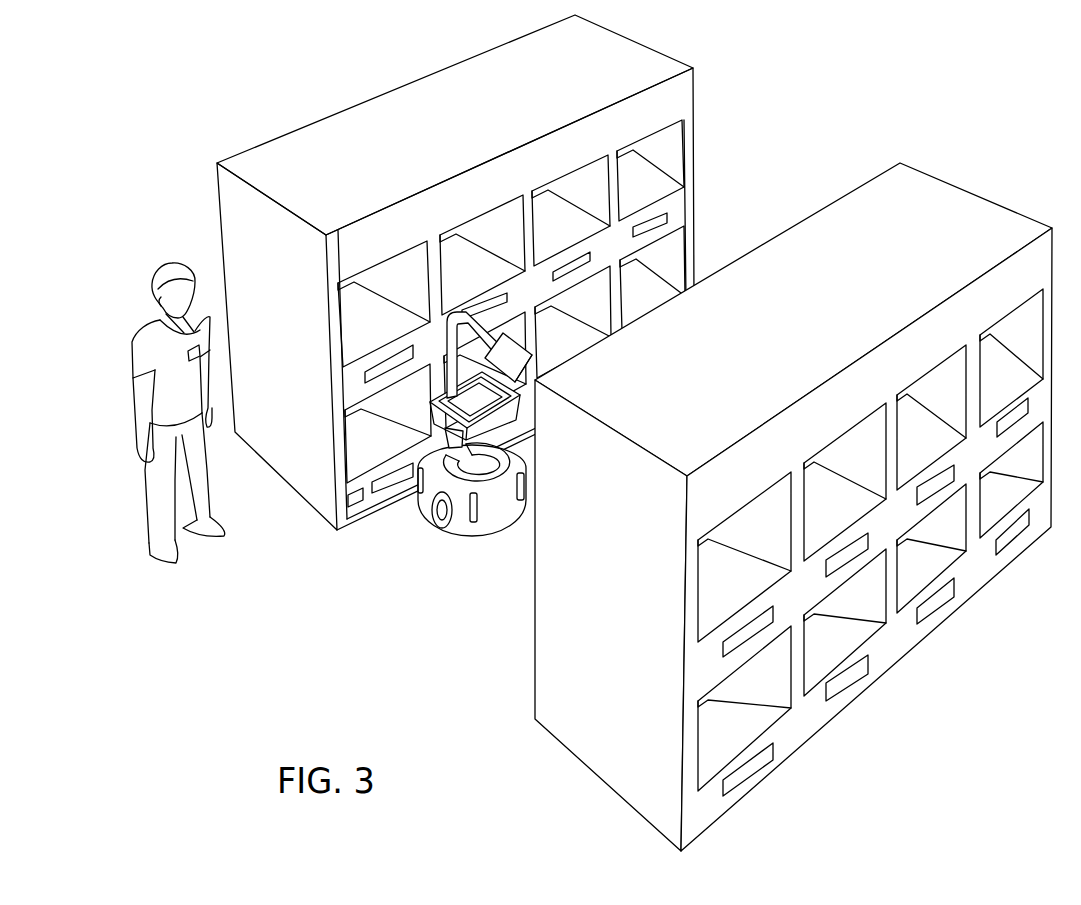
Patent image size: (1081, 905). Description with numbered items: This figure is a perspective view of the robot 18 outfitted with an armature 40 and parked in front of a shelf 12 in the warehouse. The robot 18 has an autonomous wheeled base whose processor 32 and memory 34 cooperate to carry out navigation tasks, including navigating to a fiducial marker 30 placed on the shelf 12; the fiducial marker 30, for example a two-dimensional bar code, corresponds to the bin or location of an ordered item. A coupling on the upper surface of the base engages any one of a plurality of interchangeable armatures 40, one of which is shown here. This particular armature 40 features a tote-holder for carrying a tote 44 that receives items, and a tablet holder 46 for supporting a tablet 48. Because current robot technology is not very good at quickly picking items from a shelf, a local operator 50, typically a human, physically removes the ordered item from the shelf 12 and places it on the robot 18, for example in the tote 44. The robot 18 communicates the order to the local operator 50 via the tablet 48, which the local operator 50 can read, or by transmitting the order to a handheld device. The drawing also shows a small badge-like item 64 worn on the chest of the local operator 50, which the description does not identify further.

The shelf 12 is at (307, 125).
The robot 18 is at (460, 504).
The fiducial marker 30 is at (353, 492).
The processor 32 is at (494, 510).
The memory 34 is at (434, 488).
The armature 40 is at (487, 354).
The tote 44 is at (500, 420).
The tablet holder 46 is at (532, 362).
The tablet 48 is at (519, 350).
The local operator 50 is at (185, 413).
The identification badge 64 is at (197, 358).